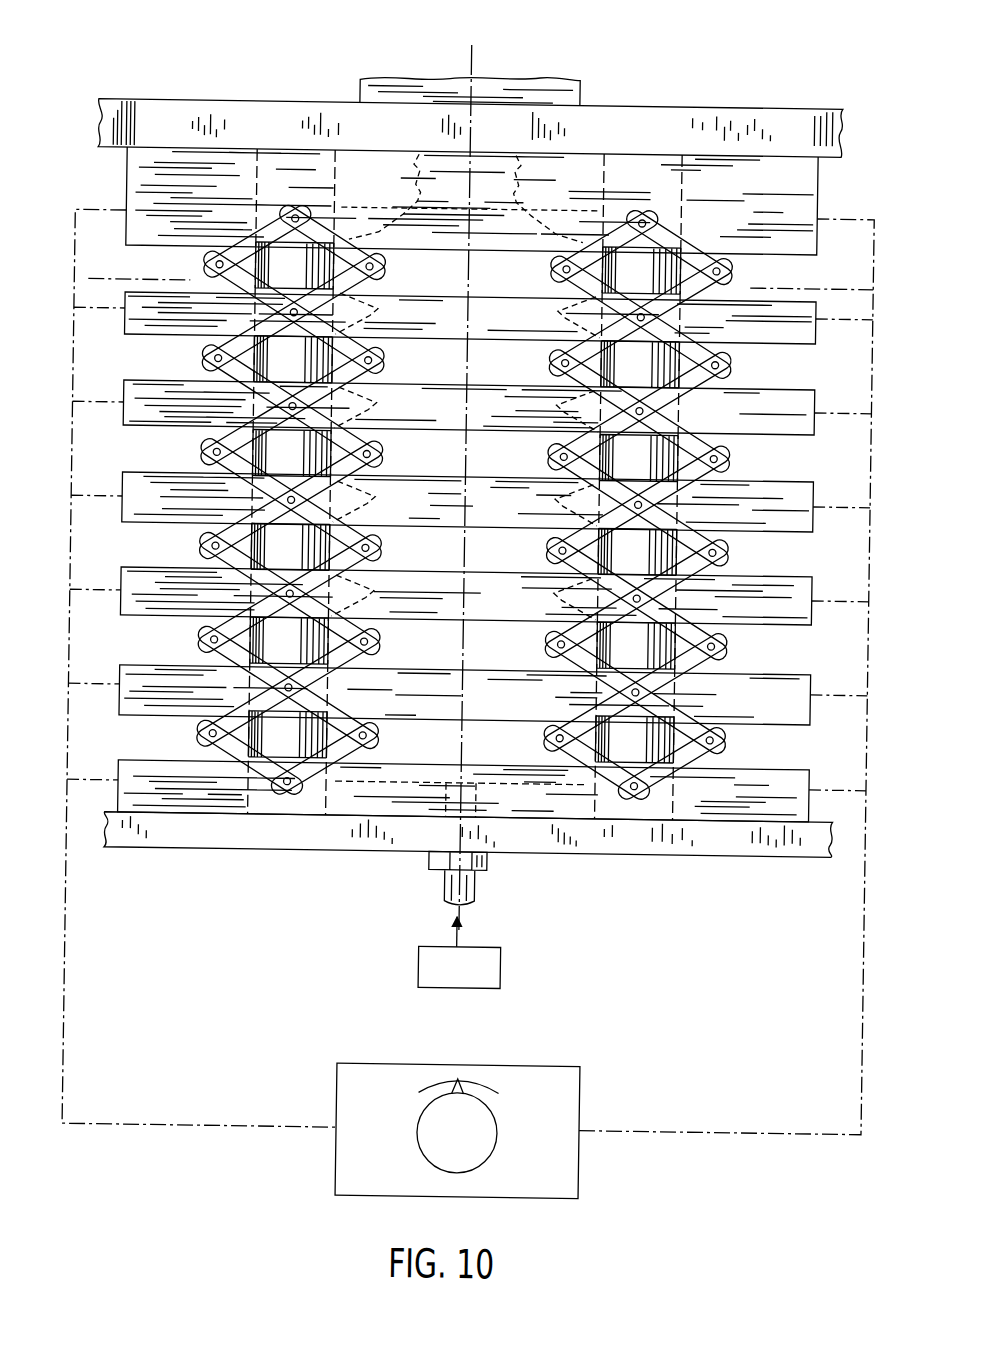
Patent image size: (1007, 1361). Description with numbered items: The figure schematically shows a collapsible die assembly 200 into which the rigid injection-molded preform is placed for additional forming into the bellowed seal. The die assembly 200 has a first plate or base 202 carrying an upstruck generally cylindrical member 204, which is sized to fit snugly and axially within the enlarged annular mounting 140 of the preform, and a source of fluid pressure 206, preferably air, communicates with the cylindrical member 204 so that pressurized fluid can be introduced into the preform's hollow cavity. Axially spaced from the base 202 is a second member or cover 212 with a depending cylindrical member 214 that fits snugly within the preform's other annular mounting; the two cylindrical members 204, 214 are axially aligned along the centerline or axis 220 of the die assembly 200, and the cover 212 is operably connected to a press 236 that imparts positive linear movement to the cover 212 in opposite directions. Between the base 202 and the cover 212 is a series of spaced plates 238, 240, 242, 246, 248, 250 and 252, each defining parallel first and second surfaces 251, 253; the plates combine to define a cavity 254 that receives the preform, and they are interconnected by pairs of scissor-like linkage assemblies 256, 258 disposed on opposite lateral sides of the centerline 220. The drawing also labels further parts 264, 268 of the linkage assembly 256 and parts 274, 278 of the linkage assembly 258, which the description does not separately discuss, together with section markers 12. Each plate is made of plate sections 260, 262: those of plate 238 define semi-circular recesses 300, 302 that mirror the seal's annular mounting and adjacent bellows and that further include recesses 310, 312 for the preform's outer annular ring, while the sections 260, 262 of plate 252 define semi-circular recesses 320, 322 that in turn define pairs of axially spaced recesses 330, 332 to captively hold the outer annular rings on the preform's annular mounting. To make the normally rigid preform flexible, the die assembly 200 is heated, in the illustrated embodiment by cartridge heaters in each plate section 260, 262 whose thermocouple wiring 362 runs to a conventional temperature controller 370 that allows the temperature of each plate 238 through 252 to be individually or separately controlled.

The section line 12- 12 is at (97, 277).
The annular mounting 140 is at (331, 202).
The die assembly 200 is at (666, 78).
The base 202 is at (789, 841).
The cylindrically shaped member 204 is at (566, 778).
The source of fluid pressure 206 is at (500, 984).
The cover 212 is at (749, 110).
The depending cylindrical member 214 is at (450, 166).
The centerline 220 is at (470, 62).
The press 236 is at (350, 82).
The plate 238 is at (772, 764).
The plate 240 is at (800, 678).
The plate 242 is at (739, 572).
The plate 246 is at (774, 476).
The plate 248 is at (773, 396).
The plate 250 is at (733, 304).
The first surface 251 is at (162, 757).
The plate 252 is at (802, 189).
The second surface 253 is at (188, 826).
The cavity 254 is at (535, 217).
The scissor-like linkage assembly 256 is at (238, 236).
The scissor-like linkage assembly 258 is at (705, 235).
The plate section 260 is at (158, 166).
The plate section 262 is at (772, 167).
The pivot pin 264 is at (207, 624).
The lower link arm 268 is at (293, 746).
The pivot pin 274 is at (736, 656).
The lower link arm 278 is at (640, 742).
The semi-circular recess 300 is at (345, 835).
The semi-circular recess 302 is at (598, 790).
The semi-circular recess 310 is at (314, 809).
The semi-circular recess 312 is at (628, 822).
The semi-circular recess 320 is at (370, 146).
The semi-circular recess 322 is at (556, 140).
The semi-circular recess 330 is at (395, 78).
The semi-circular recess 332 is at (307, 145).
The thermocouple wiring 362 is at (92, 497).
The temperature controller 370 is at (598, 1103).